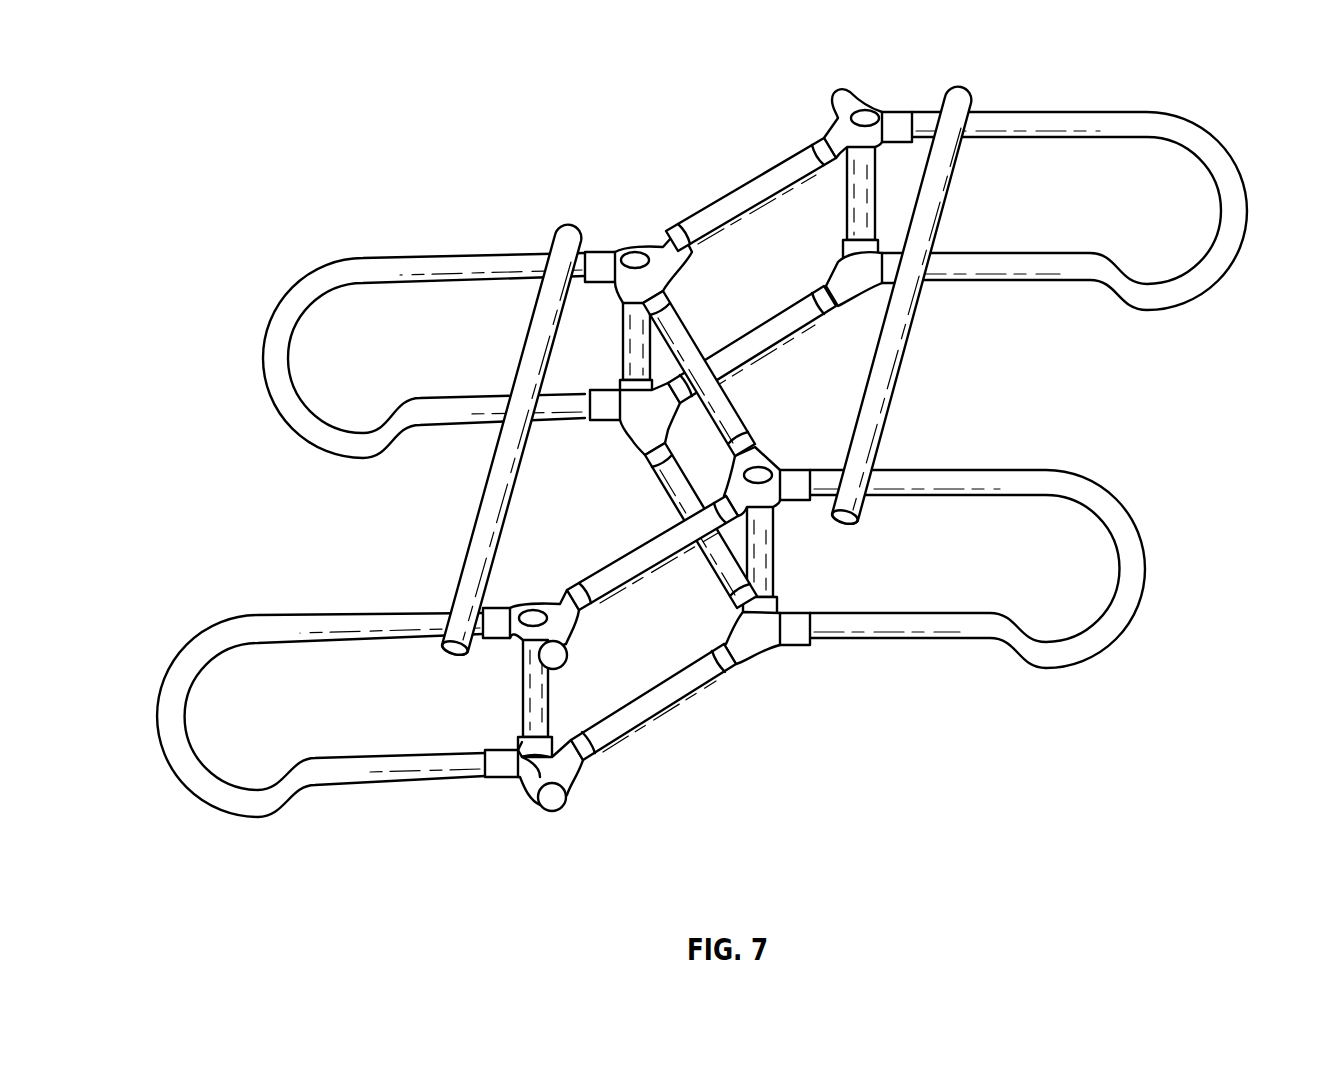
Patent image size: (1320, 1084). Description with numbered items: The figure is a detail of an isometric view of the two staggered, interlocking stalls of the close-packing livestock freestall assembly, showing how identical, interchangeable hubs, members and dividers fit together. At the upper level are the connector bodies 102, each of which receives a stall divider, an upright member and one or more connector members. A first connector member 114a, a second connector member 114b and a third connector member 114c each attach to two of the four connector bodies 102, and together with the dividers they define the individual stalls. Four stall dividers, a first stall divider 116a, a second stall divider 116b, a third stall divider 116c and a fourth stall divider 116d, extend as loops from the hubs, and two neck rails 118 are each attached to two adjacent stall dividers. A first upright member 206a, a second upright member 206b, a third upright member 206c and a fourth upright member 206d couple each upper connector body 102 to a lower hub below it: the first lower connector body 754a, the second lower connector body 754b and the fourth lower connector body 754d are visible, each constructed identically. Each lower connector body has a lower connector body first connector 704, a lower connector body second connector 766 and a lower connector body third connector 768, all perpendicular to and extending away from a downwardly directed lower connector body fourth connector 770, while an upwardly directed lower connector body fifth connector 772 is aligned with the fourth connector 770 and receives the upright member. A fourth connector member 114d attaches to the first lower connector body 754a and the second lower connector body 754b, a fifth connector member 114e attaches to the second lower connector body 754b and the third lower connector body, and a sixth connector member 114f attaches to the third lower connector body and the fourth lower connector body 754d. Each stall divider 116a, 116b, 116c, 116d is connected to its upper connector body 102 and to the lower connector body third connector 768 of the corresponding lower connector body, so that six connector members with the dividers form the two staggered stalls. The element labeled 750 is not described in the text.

The connector body 102 is at (873, 118).
The first connector member 114a is at (590, 582).
The second connector member 114b is at (703, 393).
The third connector member 114c is at (757, 192).
The fourth connector member 114d is at (653, 717).
The fifth connector member 114e is at (673, 467).
The sixth connector member 114f is at (768, 327).
The first stall divider 116a is at (343, 636).
The second stall divider 116b is at (973, 485).
The third stall divider 116c is at (447, 268).
The fourth stall divider 116d is at (1117, 123).
The neck rail 118 is at (500, 490).
The first upright member 206a is at (530, 693).
The second upright member 206b is at (768, 523).
The third upright member 206c is at (628, 317).
The fourth upright member 206d is at (873, 157).
The lower connector body first connector 704 is at (735, 655).
The coupling 750 is at (507, 752).
The first lower connector body 754a is at (641, 732).
The second lower connector body 754b is at (597, 420).
The fourth lower connector body 754d is at (838, 278).
The lower connector body second connector 766 is at (507, 780).
The lower connector body third connector 768 is at (483, 763).
The lower connector body fourth connector 770 is at (533, 807).
The lower connector body fifth connector 772 is at (540, 733).